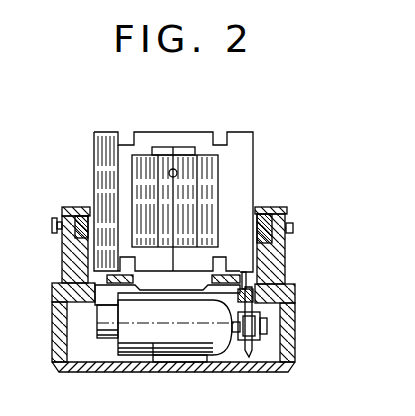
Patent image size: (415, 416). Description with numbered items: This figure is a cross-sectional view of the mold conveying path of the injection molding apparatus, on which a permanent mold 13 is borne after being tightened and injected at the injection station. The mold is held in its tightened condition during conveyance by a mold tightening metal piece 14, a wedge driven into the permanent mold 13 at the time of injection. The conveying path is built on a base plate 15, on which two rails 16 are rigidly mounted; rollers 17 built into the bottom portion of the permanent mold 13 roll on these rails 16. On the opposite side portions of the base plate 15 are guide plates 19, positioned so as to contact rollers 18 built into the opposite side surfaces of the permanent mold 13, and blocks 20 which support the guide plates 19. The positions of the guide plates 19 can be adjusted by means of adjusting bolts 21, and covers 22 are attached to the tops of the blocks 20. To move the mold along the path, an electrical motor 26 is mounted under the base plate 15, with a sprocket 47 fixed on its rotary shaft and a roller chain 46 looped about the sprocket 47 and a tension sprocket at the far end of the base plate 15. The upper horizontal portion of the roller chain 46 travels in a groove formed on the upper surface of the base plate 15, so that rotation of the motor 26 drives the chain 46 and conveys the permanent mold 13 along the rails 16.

The permanent mold 13 is at (250, 153).
The mold tightening metal piece 14 is at (147, 155).
The base plate 15 is at (52, 290).
The rails 16 is at (126, 286).
The rollers 17 is at (243, 265).
The rollers 18 is at (250, 232).
The guide plates 19 is at (254, 240).
The blocks 20 is at (272, 266).
The adjusting bolts 21 is at (52, 226).
The covers 22 is at (83, 207).
The electrical motor 26 is at (175, 358).
The roller chain 46 is at (275, 283).
The sprocket 47 is at (262, 348).